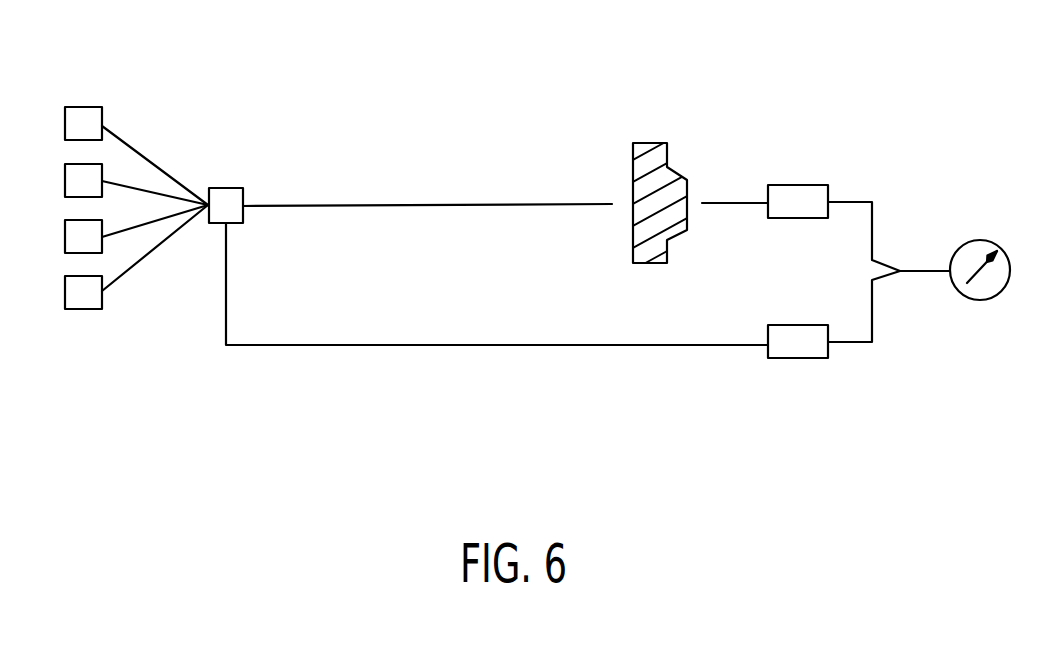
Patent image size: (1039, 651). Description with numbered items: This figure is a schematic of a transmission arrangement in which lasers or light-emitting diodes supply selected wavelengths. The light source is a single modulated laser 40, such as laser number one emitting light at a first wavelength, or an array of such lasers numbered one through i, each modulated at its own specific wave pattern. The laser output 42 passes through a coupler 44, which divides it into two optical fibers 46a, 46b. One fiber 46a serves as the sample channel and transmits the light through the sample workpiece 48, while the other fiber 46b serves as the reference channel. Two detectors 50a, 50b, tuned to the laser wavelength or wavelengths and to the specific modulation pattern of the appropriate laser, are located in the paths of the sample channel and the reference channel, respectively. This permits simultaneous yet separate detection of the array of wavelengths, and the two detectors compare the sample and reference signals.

The modulated laser 40 is at (85, 106).
The laser output 42 is at (145, 153).
The coupler 44 is at (232, 188).
The optical fiber 46a is at (399, 200).
The optical fiber 46b is at (449, 345).
The sample workpiece 48 is at (652, 142).
The detector 50a is at (780, 185).
The detector 50b is at (808, 358).